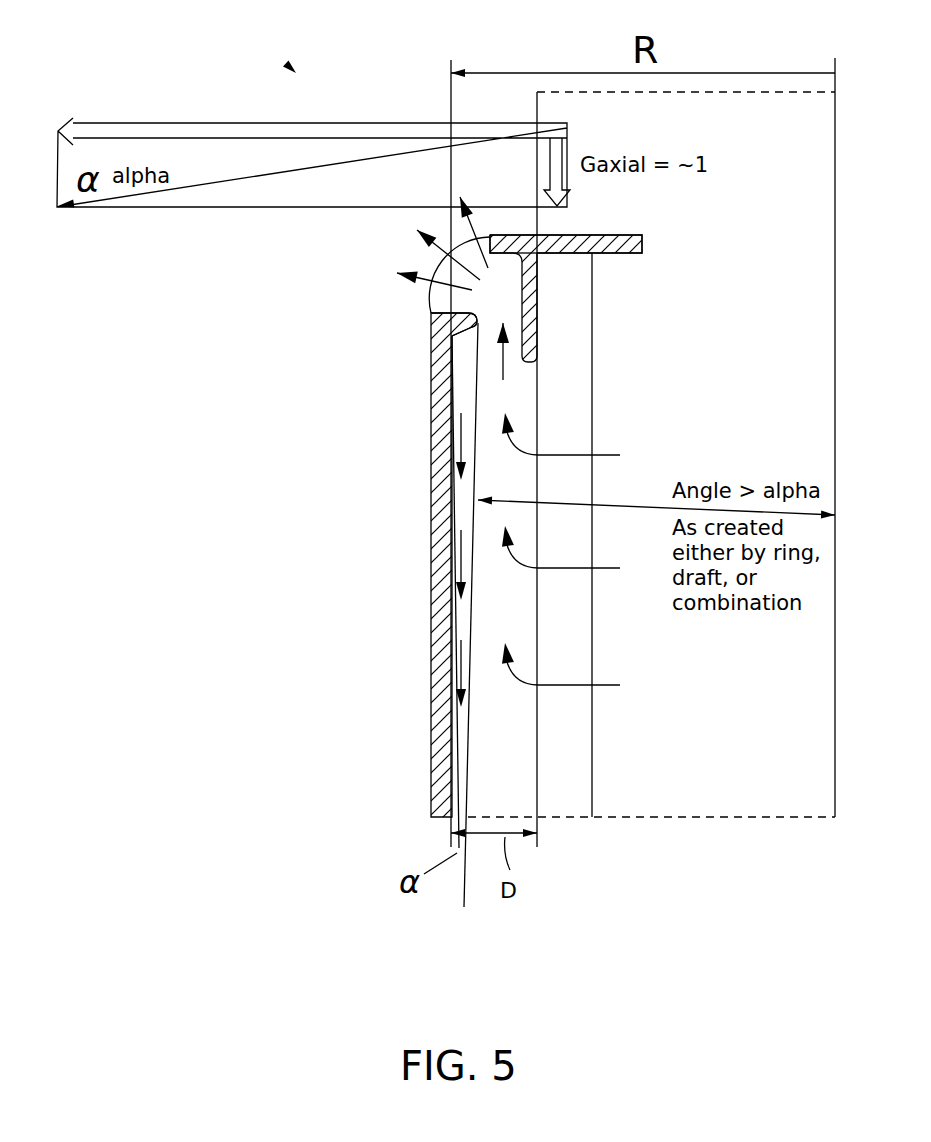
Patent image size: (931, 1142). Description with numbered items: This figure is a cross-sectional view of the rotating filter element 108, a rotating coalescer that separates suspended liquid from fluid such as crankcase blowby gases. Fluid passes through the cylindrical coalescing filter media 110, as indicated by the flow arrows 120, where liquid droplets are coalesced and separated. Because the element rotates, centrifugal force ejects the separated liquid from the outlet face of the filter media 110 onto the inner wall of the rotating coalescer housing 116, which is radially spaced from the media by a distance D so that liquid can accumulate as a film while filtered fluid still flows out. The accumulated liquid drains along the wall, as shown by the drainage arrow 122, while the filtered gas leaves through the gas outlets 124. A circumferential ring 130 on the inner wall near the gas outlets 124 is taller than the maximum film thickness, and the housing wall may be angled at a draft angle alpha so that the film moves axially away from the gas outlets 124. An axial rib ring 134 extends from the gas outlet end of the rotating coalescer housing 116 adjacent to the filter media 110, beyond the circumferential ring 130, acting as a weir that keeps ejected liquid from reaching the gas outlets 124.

The rotating filter element 108 is at (290, 68).
The filter media 110 is at (582, 378).
The rotating coalescer housing 116 is at (440, 490).
The flow arrows 120 is at (430, 264).
The drainage arrow 122 is at (452, 432).
The gas outlets 124 is at (430, 302).
The circumferential ring 130 is at (430, 322).
The axial rib ring 134 is at (537, 302).